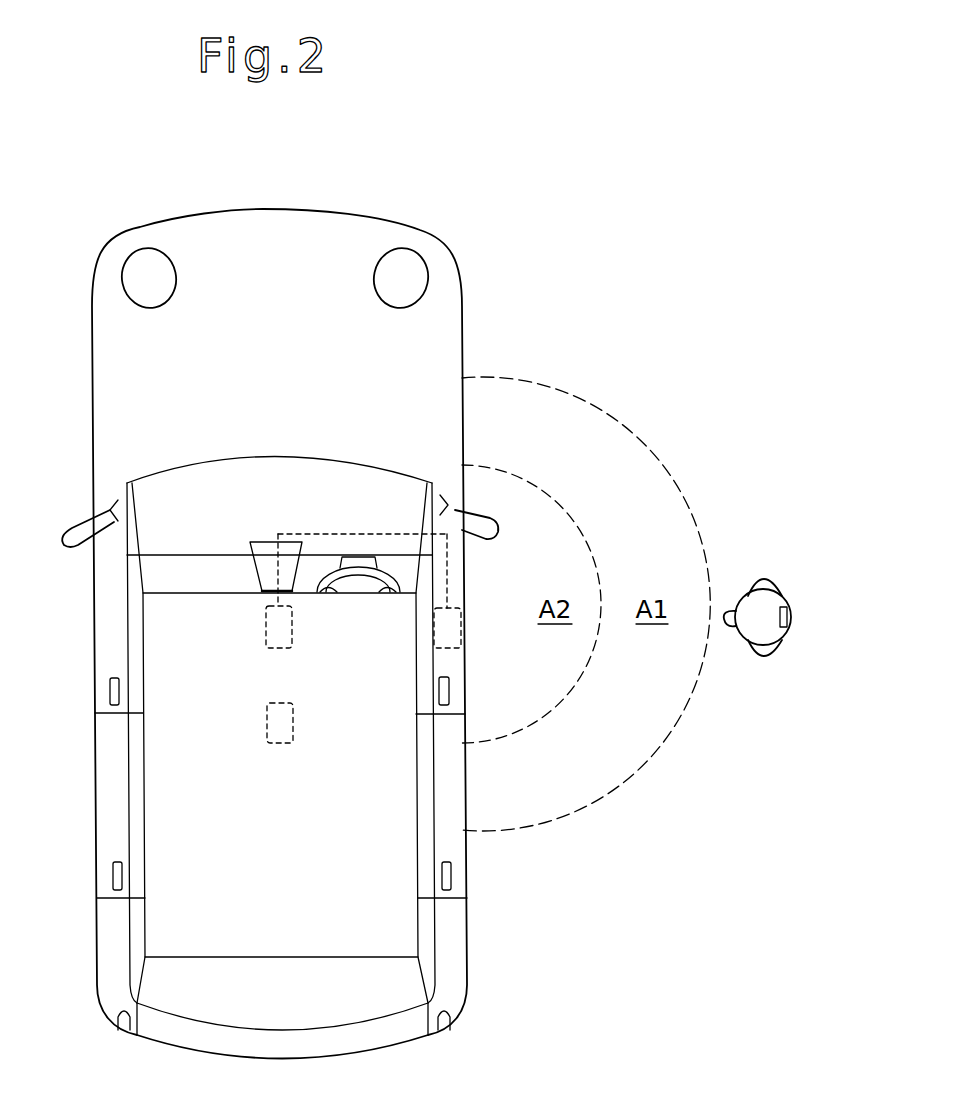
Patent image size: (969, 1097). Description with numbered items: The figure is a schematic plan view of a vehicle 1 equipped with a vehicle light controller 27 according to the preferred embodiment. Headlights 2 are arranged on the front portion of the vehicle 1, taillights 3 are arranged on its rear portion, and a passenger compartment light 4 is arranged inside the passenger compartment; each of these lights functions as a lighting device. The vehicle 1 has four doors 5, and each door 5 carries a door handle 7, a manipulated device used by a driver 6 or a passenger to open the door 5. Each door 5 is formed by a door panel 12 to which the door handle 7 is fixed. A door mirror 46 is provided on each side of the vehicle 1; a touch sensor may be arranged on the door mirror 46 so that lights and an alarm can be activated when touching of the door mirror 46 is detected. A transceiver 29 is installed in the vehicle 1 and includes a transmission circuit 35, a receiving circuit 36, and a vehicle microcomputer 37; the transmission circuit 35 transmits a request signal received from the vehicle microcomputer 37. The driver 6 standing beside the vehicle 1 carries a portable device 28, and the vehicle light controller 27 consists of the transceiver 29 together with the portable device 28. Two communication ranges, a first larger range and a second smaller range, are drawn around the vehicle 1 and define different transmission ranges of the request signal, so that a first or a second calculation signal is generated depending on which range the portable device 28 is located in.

The vehicle 1 is at (463, 282).
The headlights 2 is at (148, 262).
The taillights 3 is at (125, 1025).
The passenger compartment light 4 is at (278, 745).
The door 5 is at (99, 504).
The driver 6 is at (770, 575).
The door handle 7 is at (110, 688).
The door panel 12 is at (98, 734).
The vehicle light controller 27 is at (689, 328).
The portable device 28 is at (786, 605).
The transceiver 29 is at (287, 688).
The transmission circuit 35 is at (362, 612).
The receiving circuit 36 is at (437, 650).
The vehicle microcomputer 37 is at (292, 624).
The door mirror 46 is at (62, 545).